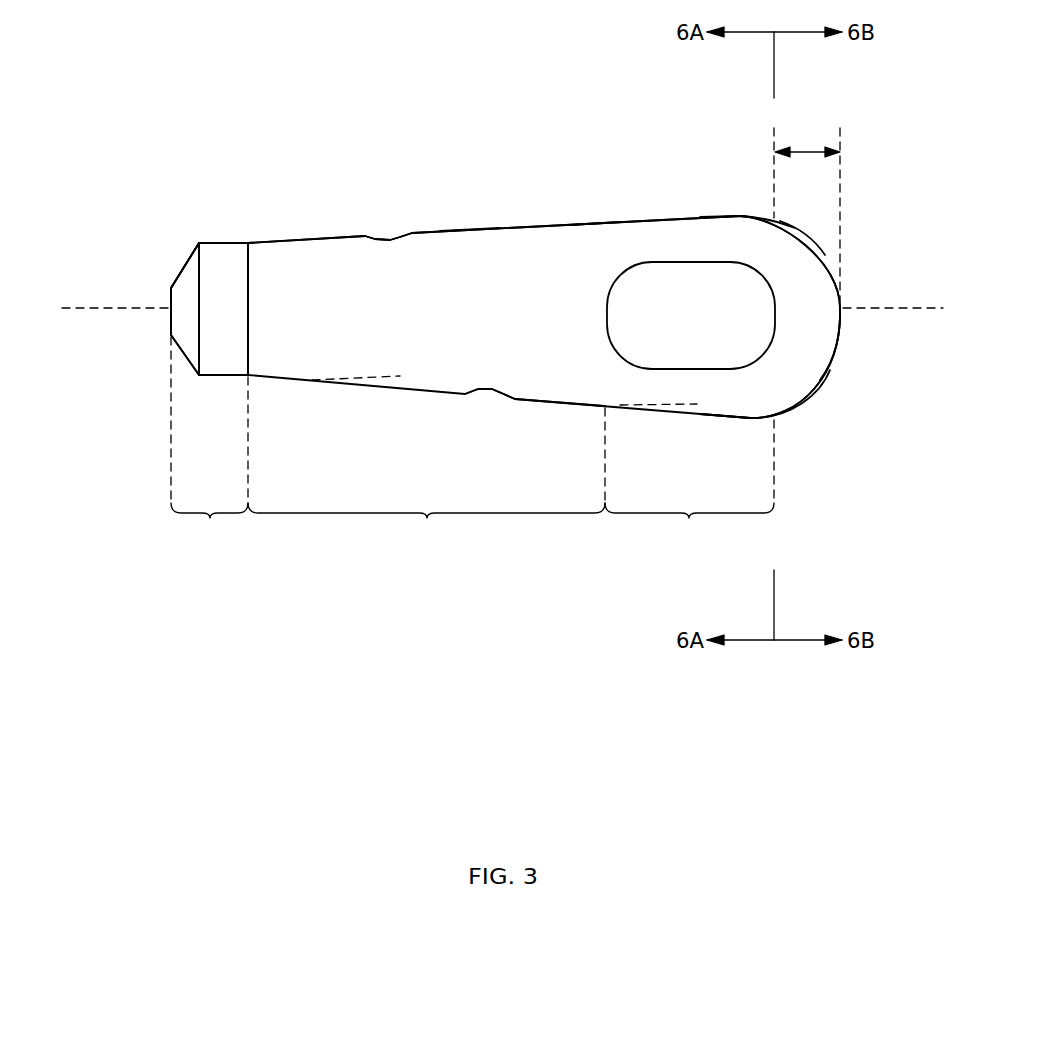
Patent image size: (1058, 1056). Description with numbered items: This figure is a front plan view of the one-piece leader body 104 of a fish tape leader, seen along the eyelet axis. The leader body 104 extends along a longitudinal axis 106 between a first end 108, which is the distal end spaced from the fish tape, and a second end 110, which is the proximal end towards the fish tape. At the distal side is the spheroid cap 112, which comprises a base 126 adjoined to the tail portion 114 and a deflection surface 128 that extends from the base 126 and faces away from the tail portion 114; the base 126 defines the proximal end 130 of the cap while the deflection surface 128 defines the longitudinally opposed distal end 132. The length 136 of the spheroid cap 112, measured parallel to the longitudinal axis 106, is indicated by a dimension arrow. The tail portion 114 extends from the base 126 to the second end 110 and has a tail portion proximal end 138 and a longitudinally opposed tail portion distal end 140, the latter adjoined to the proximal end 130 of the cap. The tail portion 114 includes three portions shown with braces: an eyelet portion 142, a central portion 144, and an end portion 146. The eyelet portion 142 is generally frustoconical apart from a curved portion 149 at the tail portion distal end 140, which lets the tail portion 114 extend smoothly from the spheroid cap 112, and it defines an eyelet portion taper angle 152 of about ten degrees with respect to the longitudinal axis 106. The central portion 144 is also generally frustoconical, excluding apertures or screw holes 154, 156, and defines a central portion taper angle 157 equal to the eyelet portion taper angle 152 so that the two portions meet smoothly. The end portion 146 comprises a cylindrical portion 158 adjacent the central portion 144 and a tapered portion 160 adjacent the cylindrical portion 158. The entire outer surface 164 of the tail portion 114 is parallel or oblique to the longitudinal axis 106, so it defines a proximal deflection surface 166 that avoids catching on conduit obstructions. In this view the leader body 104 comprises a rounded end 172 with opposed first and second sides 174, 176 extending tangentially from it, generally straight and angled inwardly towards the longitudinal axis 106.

The leader body 104 is at (250, 607).
The longitudinal axis 106 is at (893, 310).
The first end 108 is at (845, 312).
The second end 110 is at (165, 302).
The spheroid cap 112 is at (795, 400).
The tail portion 114 is at (541, 240).
The base 126 is at (802, 452).
The deflection surface 128 is at (835, 261).
The proximal end 130 is at (776, 416).
The distal end 132 is at (842, 305).
The length 136 is at (805, 150).
The tail portion proximal end 138 is at (139, 309).
The tail portion distal end 140 is at (775, 221).
The eyelet portion 142 is at (689, 476).
The central portion 144 is at (426, 461).
The end portion 146 is at (155, 426).
The curved portion 149 is at (762, 419).
The eyelet portion taper angle 152 is at (660, 406).
The aperture 154 is at (492, 391).
The aperture 156 is at (388, 240).
The central portion taper angle 157 is at (727, 217).
The cylindrical portion 158 is at (217, 250).
The tapered portion 160 is at (182, 272).
The outer surface 164 is at (470, 228).
The proximal deflection surface 166 is at (352, 260).
The rounded end 172 is at (811, 245).
The first side 174 is at (567, 405).
The second side 176 is at (594, 222).